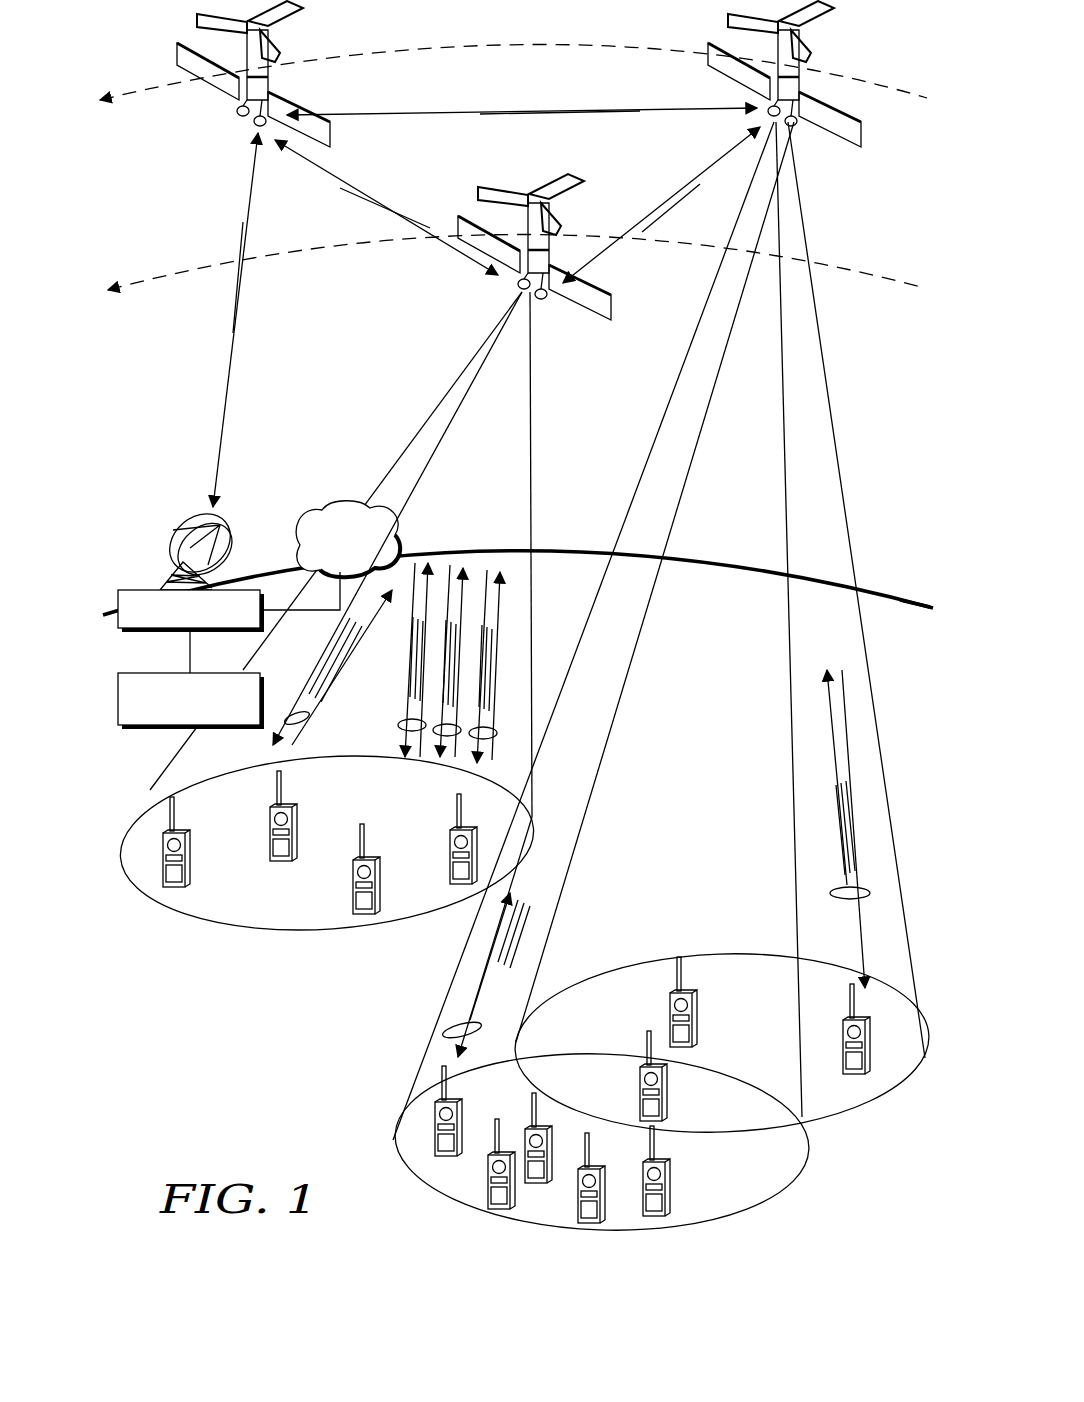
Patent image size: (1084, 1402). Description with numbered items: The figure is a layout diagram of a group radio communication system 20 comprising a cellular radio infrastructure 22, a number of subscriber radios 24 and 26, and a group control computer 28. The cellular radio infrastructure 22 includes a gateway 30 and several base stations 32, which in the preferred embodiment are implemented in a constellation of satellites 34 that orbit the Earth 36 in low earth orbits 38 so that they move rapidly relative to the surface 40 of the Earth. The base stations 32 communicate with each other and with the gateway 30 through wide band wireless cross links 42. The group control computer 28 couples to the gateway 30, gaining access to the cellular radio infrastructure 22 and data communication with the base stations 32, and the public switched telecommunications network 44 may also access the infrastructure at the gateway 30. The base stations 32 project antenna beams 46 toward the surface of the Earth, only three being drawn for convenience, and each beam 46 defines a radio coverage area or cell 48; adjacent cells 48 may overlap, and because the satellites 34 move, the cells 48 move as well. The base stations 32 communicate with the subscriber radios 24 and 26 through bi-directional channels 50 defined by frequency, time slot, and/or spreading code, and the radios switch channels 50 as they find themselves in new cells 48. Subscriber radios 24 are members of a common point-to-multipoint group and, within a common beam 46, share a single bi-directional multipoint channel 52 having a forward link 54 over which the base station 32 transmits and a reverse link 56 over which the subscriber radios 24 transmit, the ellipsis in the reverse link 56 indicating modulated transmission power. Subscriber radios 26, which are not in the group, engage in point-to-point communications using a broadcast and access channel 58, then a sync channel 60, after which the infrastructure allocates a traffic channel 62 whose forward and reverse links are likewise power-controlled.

The group radio communication system 20 is at (258, 1142).
The cellular radio infrastructure 22 is at (185, 148).
The subscriber radios 24 is at (190, 862).
The subscriber radios 26 is at (458, 846).
The group control computer 28 is at (157, 728).
The gateway 30 is at (157, 638).
The base stations 32 is at (268, 78).
The satellites 34 is at (180, 45).
The Earth 36 is at (912, 596).
The low earth orbits 38 is at (628, 44).
The surface of the Earth 40 is at (578, 553).
The wide band wireless cross links 42 is at (357, 200).
The public switched telecommunications network 44 is at (388, 514).
The antenna beams 46 is at (700, 330).
The cells 48 is at (162, 905).
The bi-directional channels 50 is at (286, 708).
The bi-directional multipoint channel 52 is at (308, 722).
The forward link 54 is at (370, 625).
The reverse link 56 is at (345, 657).
The bi-directional broadcast and access channel 58 is at (492, 742).
The bi-directional sync channel 60 is at (432, 718).
The bi-directional traffic channel 62 is at (398, 727).